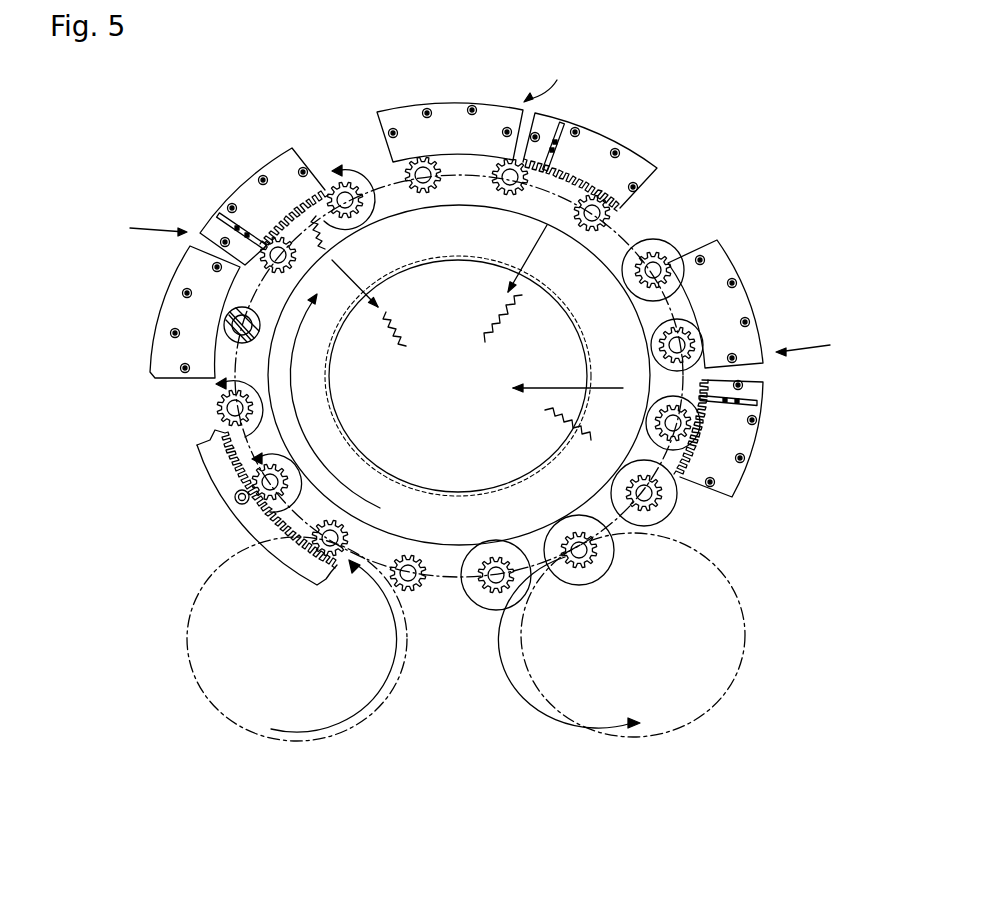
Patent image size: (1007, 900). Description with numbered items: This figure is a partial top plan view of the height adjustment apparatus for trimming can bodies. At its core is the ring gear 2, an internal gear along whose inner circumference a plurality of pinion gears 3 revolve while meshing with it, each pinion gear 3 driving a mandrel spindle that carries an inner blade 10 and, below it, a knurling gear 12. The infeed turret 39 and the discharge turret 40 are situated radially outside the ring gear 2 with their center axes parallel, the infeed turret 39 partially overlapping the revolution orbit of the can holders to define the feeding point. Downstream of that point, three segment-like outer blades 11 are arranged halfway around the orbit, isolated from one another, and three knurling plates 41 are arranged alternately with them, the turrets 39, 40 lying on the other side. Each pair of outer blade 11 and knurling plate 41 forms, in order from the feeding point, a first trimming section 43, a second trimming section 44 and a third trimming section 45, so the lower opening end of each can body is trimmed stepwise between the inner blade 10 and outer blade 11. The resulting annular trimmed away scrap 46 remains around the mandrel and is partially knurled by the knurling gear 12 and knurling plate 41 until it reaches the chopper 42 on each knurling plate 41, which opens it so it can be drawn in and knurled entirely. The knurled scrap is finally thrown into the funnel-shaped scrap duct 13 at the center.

The ring gear 2 is at (217, 462).
The pinion gear 3 is at (267, 503).
The inner blade 10 is at (223, 323).
The outer blade 11 is at (401, 112).
The knurling gear 12 is at (220, 410).
The scrap duct 13 is at (563, 258).
The infeed turret 39 is at (187, 627).
The discharge turret 40 is at (743, 597).
The knurling plate 41 is at (250, 185).
The chopper 42 is at (218, 215).
The first trimming section 43 is at (143, 229).
The second trimming section 44 is at (553, 81).
The third trimming section 45 is at (815, 343).
The annular trimmed away scrap 46 is at (483, 340).